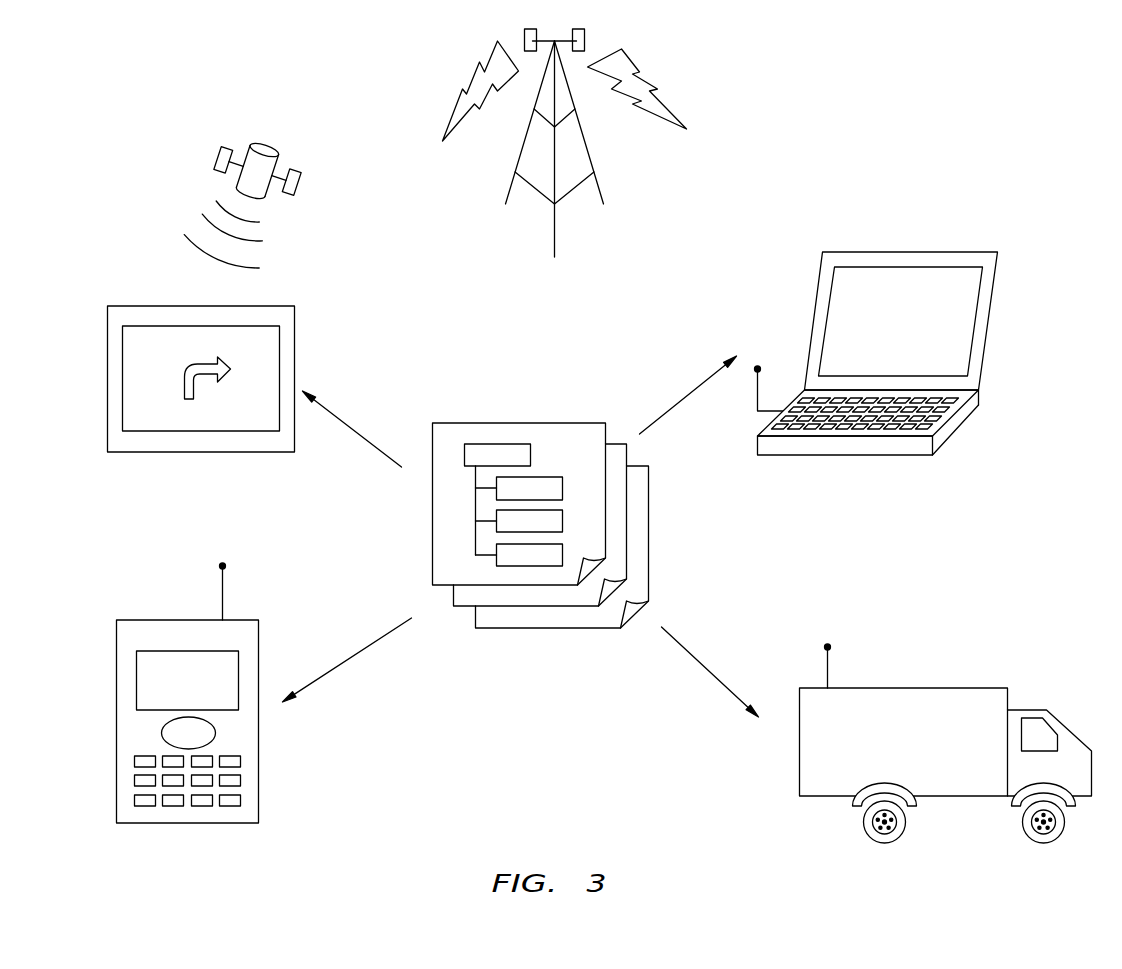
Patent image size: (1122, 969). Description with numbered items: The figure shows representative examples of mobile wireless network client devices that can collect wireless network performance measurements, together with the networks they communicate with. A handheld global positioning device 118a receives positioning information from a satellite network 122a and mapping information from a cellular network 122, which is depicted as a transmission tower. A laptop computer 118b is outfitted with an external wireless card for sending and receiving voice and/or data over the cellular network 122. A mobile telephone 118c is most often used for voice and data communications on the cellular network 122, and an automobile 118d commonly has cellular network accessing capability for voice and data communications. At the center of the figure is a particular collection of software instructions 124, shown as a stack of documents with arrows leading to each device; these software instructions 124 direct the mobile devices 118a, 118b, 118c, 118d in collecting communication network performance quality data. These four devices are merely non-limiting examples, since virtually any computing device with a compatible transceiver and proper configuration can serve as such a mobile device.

The cellular network 122 is at (573, 190).
The satellite network 122a is at (266, 149).
The handheld global positioning device 118a is at (200, 453).
The laptop computer 118b is at (843, 456).
The mobile telephone 118c is at (188, 824).
The automobile 118d is at (905, 689).
The software instructions 124 is at (650, 533).